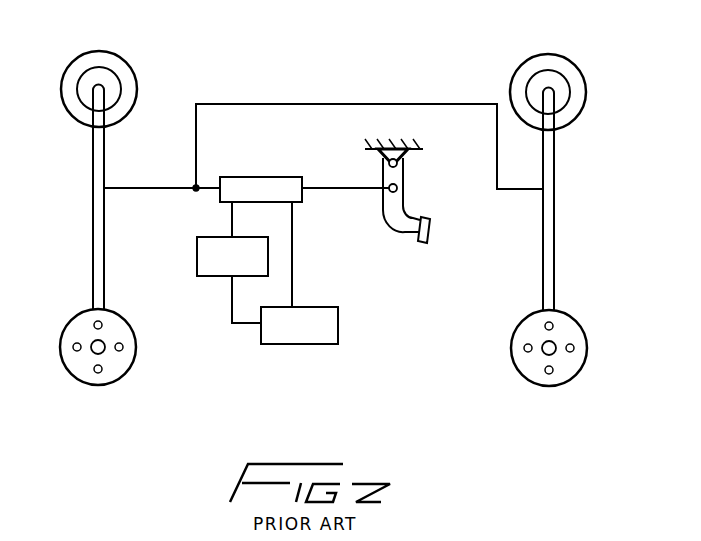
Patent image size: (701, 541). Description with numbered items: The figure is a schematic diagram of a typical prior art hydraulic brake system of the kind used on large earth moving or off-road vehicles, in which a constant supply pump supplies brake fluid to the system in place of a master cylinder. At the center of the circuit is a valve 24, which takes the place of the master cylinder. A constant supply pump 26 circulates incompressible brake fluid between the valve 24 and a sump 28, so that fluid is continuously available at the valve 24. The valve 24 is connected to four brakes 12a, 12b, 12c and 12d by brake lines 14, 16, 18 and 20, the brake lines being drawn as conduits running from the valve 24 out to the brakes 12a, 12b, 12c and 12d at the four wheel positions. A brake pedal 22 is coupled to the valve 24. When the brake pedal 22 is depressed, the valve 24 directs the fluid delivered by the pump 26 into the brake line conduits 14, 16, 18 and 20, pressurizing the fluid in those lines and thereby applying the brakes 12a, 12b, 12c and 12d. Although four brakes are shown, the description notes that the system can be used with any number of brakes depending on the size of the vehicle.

The brake 12a is at (88, 56).
The brake 12b is at (570, 68).
The brake 12c is at (523, 364).
The brake 12d is at (128, 362).
The brake line 14 is at (158, 190).
The brake line 16 is at (93, 266).
The brake line 18 is at (312, 103).
The brake line 20 is at (555, 240).
The brake pedal 22 is at (403, 200).
The valve 24 is at (280, 182).
The constant supply pump 26 is at (197, 270).
The sump 28 is at (338, 332).